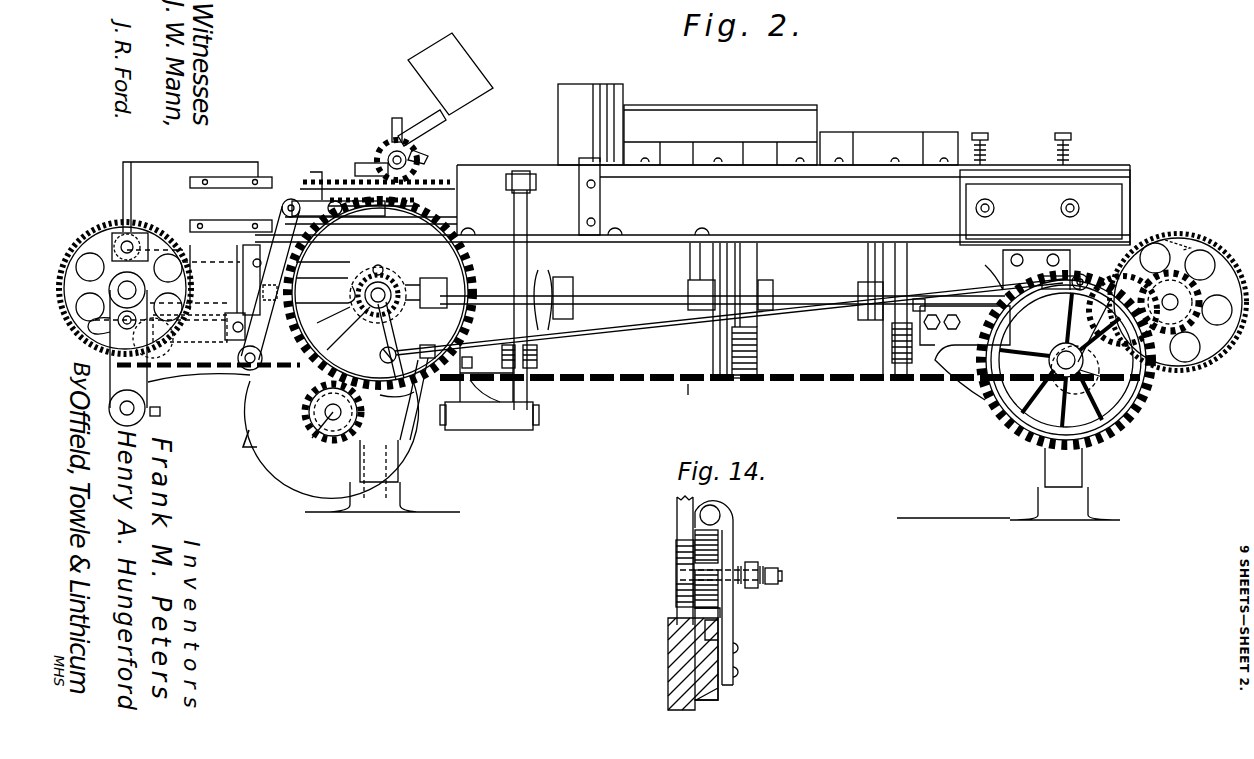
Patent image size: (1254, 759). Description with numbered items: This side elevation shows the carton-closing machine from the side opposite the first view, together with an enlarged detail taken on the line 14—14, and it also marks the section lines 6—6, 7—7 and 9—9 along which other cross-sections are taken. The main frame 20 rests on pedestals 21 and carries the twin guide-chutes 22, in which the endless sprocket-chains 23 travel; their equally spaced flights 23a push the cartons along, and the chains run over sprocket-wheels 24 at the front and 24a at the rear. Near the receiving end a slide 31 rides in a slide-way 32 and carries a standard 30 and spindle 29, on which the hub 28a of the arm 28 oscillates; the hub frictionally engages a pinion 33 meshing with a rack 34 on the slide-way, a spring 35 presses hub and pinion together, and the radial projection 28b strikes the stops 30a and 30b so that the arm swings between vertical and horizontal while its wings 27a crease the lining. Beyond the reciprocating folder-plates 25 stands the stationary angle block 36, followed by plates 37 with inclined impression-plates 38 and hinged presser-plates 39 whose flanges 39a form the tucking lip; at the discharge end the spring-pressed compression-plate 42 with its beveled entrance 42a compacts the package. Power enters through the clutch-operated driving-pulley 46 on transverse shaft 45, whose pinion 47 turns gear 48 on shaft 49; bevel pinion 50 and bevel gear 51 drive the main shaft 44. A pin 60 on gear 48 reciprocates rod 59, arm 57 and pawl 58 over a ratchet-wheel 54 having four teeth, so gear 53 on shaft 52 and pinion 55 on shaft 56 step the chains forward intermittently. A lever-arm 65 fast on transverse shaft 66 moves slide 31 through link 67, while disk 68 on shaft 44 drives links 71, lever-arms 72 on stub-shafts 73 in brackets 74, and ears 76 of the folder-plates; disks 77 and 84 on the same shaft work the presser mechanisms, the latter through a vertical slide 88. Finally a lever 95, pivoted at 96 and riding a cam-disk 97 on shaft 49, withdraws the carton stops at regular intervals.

In FIG. 2, the section line 6— 6 is at (498, 475).
In FIG. 2, the section line 7— 7 is at (688, 420).
In FIG. 2, the section line 9— 9 is at (855, 110).
In FIG. 2, the section line 14— 14 is at (350, 165).
In FIG. 2, the main frame 20 is at (395, 396).
In FIG. 2, the pedestals 21 is at (398, 458).
In FIG. 2, the guide-chutes 22 is at (663, 224).
In FIG. 2, the endless sprocket-chains 23 is at (800, 384).
In FIG. 2, the flights 23a is at (692, 388).
In FIG. 2, the sprocket-wheels 24 is at (102, 242).
In FIG. 2, the sprocket-wheels 24a is at (1203, 240).
In FIG. 2, the folder-plates 25 is at (552, 166).
In FIG. 2, the wings 27a is at (450, 74).
In FIG. 2, the arm 28 is at (472, 100).
In FIG. 14, the arm 28 is at (676, 508).
In FIG. 14, the hub 28a is at (677, 548).
In FIG. 2, the radial projection 28b is at (388, 145).
In FIG. 14, the radial projection 28b is at (690, 576).
In FIG. 14, the spindle 29 is at (778, 575).
In FIG. 14, the standard 30 is at (733, 608).
In FIG. 2, the stop 30a is at (398, 118).
In FIG. 2, the stop 30b is at (355, 168).
In FIG. 2, the slide 31 is at (290, 200).
In FIG. 14, the slide 31 is at (722, 656).
In FIG. 2, the slide-way 32 is at (272, 189).
In FIG. 2, the pinion 33 is at (425, 158).
In FIG. 14, the pinion 33 is at (694, 612).
In FIG. 2, the rack 34 is at (310, 200).
In FIG. 14, the rack 34 is at (720, 626).
In FIG. 14, the spring 35 is at (740, 572).
In FIG. 2, the stationary folder 36 is at (620, 103).
In FIG. 2, the plates 37 is at (745, 152).
In FIG. 2, the impression-plate 38 is at (790, 150).
In FIG. 2, the presser-plates 39 is at (720, 138).
In FIG. 2, the lip or flange 39a is at (752, 108).
In FIG. 2, the compression-plate 42 is at (1015, 170).
In FIG. 2, the bevel 42a is at (963, 173).
In FIG. 2, the main power-transmitting shaft 44 is at (597, 294).
In FIG. 2, the power-receiving shaft 45 is at (328, 436).
In FIG. 2, the driving-pulley 46 is at (268, 466).
In FIG. 2, the pinion 47 is at (302, 410).
In FIG. 2, the gear 48 is at (418, 400).
In FIG. 2, the transverse shaft 49 is at (376, 308).
In FIG. 2, the bevel pinion 50 is at (386, 262).
In FIG. 2, the bevel gear 51 is at (424, 272).
In FIG. 2, the transverse shaft 52 is at (1108, 378).
In FIG. 2, the gear 53 is at (1115, 400).
In FIG. 2, the ratchet-wheel 54 is at (1118, 430).
In FIG. 2, the pinion 55 is at (1186, 312).
In FIG. 2, the shaft 56 is at (1196, 366).
In FIG. 2, the arm 57 is at (1062, 330).
In FIG. 2, the pawl 58 is at (1036, 268).
In FIG. 2, the rod 59 is at (661, 323).
In FIG. 2, the pin 60 is at (424, 345).
In FIG. 2, the lever-arm 65 is at (197, 197).
In FIG. 2, the transverse shaft 66 is at (242, 365).
In FIG. 2, the link 67 is at (316, 172).
In FIG. 2, the solid disk 68 is at (540, 355).
In FIG. 2, the links 71 is at (560, 278).
In FIG. 2, the lever-arms 72 is at (530, 217).
In FIG. 2, the stub-shafts 73 is at (536, 416).
In FIG. 2, the brackets 74 is at (494, 422).
In FIG. 2, the ears 76 is at (505, 177).
In FIG. 2, the solid disk 77 is at (757, 341).
In FIG. 2, the solid disk 84 is at (890, 345).
In FIG. 2, the vertical slide 88 is at (872, 258).
In FIG. 2, the lever 95 is at (223, 258).
In FIG. 2, the pivot 96 is at (177, 349).
In FIG. 2, the cam-disk 97 is at (362, 300).